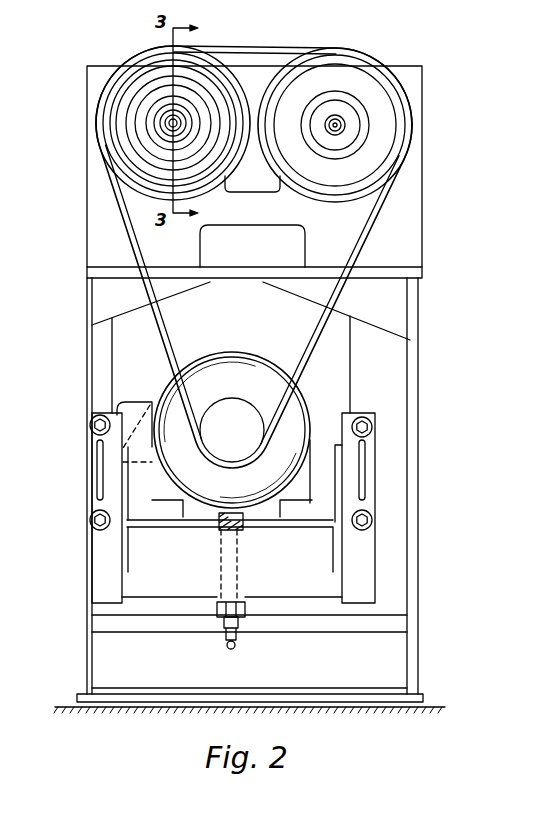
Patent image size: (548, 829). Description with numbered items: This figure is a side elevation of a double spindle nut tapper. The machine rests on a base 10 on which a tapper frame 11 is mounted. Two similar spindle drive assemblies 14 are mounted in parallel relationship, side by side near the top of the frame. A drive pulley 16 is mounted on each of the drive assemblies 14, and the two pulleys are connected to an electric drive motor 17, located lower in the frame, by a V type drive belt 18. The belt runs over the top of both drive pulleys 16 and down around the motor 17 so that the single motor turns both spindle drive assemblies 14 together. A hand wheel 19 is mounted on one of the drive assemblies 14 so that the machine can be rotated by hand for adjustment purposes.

The base 10 is at (422, 455).
The tapper frame 11 is at (422, 153).
The spindle drive assemblies 14 is at (168, 127).
The drive pulley 16 is at (150, 60).
The electric drive motor 17 is at (290, 415).
The V type drive belt 18 is at (362, 240).
The hand wheel 19 is at (133, 113).